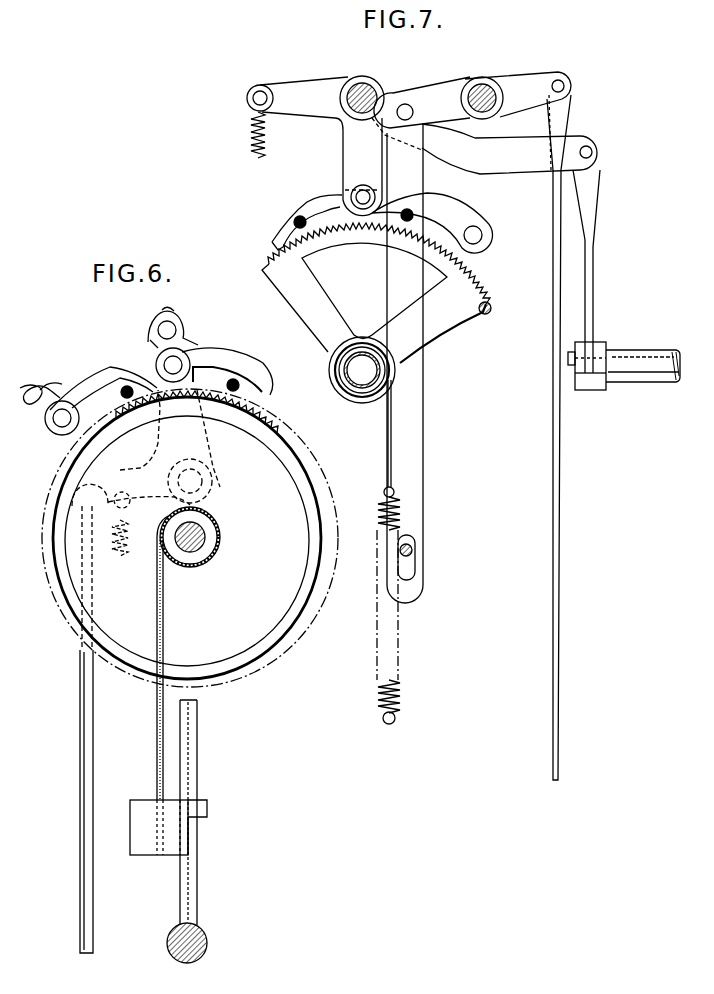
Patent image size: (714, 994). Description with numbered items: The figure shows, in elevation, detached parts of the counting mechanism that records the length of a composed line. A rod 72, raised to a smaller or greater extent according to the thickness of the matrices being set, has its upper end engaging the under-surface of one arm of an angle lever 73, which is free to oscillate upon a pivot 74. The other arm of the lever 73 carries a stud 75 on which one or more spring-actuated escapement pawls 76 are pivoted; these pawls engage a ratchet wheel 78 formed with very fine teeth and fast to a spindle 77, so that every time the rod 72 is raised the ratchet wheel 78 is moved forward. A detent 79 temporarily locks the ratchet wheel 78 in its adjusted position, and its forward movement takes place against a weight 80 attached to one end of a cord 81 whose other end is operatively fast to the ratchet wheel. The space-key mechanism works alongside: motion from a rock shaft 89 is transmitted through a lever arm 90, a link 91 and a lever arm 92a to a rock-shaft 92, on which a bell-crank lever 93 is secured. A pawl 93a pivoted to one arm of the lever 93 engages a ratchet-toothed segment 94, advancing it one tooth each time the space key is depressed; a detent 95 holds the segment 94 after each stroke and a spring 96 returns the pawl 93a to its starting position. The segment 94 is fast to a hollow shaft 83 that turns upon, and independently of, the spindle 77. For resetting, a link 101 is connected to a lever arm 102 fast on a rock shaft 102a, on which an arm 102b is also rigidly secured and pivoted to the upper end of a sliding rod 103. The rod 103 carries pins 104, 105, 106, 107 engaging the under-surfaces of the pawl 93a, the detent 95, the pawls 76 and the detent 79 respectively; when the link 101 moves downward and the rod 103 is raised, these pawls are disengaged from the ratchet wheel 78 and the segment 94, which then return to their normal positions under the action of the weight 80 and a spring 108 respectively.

In FIG. 6, the rod 72 is at (94, 925).
In FIG. 6, the angle lever 73 is at (120, 470).
In FIG. 6, the pivot 74 is at (192, 481).
In FIG. 6, the stud 75 is at (180, 363).
In FIG. 6, the escapement pawl 76 is at (233, 358).
In FIG. 6, the spindle 77 is at (205, 538).
In FIG. 7, the spindle 77 is at (372, 372).
In FIG. 6, the ratchet wheel 78 is at (265, 452).
In FIG. 6, the detent 79 is at (98, 378).
In FIG. 6, the weight 80 is at (143, 852).
In FIG. 6, the cord 81 is at (166, 640).
In FIG. 7, the hollow shaft 83 is at (366, 392).
In FIG. 7, the rock shaft 89 is at (623, 350).
In FIG. 7, the lever arm 90 is at (594, 382).
In FIG. 7, the link 91 is at (594, 258).
In FIG. 7, the rock-shaft 92 is at (365, 85).
In FIG. 7, the lever arm 92a is at (508, 168).
In FIG. 7, the bell-crank lever 93 is at (345, 143).
In FIG. 7, the pawl 93a is at (292, 203).
In FIG. 7, the ratchet-toothed segment 94 is at (432, 325).
In FIG. 7, the detent 95 is at (448, 207).
In FIG. 7, the spring 96 is at (250, 134).
In FIG. 7, the link 101 is at (560, 672).
In FIG. 7, the lever arm 102 is at (525, 75).
In FIG. 7, the rock shaft 102a is at (478, 82).
In FIG. 7, the arm 102b is at (440, 76).
In FIG. 7, the sliding rod 103 is at (410, 447).
In FIG. 7, the pin 104 is at (303, 229).
In FIG. 7, the pin 105 is at (404, 222).
In FIG. 6, the pin 106 is at (233, 392).
In FIG. 6, the pin 107 is at (128, 398).
In FIG. 7, the spring 108 is at (396, 652).